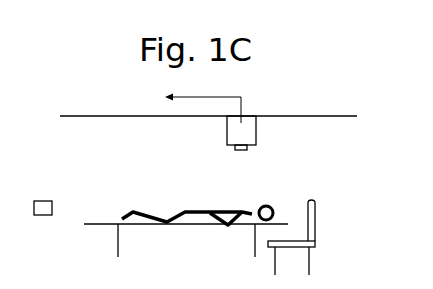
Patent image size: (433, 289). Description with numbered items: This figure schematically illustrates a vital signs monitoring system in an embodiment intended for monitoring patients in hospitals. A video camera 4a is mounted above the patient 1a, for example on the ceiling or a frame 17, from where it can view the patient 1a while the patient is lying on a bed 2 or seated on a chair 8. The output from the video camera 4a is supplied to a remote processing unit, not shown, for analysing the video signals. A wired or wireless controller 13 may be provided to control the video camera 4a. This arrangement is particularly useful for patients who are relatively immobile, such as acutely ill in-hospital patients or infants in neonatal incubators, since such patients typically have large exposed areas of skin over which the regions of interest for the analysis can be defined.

The frame 17 is at (153, 117).
The video camera 4a is at (245, 134).
The controller 13 is at (43, 201).
The bed 2 is at (183, 226).
The patient 1a is at (207, 208).
The chair 8 is at (316, 227).